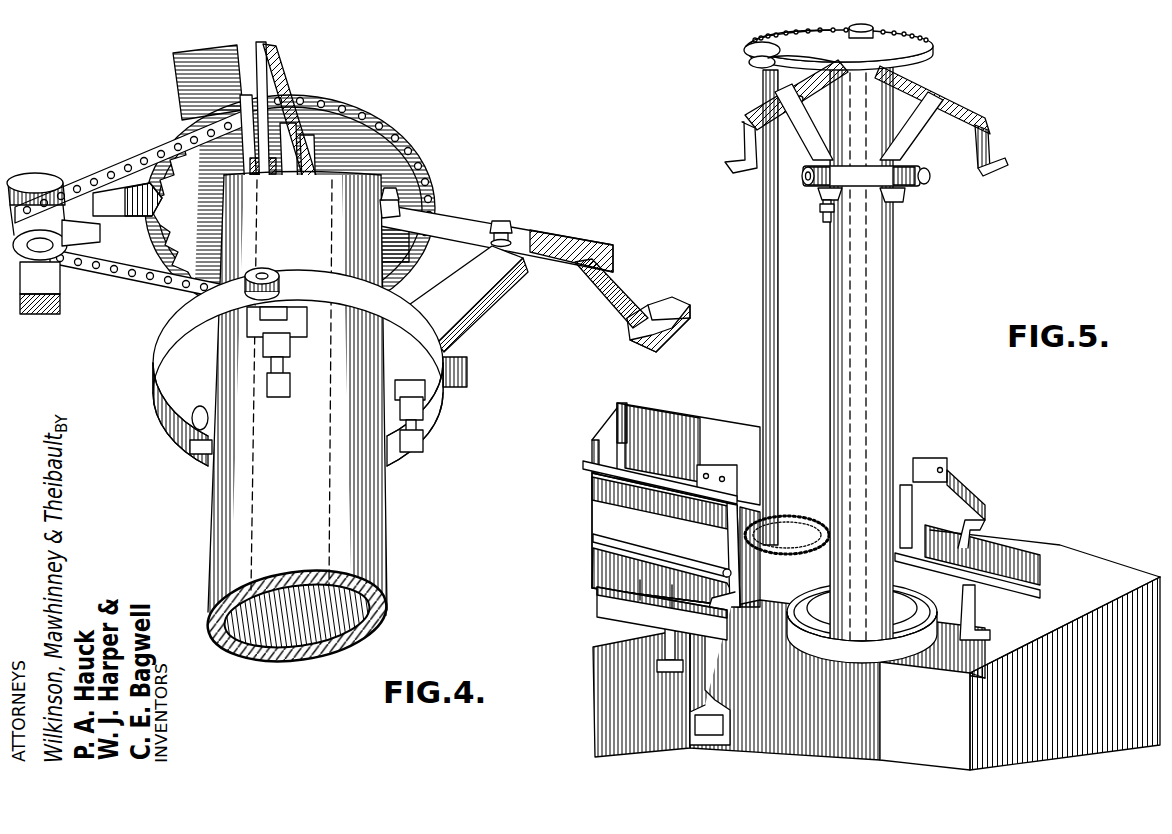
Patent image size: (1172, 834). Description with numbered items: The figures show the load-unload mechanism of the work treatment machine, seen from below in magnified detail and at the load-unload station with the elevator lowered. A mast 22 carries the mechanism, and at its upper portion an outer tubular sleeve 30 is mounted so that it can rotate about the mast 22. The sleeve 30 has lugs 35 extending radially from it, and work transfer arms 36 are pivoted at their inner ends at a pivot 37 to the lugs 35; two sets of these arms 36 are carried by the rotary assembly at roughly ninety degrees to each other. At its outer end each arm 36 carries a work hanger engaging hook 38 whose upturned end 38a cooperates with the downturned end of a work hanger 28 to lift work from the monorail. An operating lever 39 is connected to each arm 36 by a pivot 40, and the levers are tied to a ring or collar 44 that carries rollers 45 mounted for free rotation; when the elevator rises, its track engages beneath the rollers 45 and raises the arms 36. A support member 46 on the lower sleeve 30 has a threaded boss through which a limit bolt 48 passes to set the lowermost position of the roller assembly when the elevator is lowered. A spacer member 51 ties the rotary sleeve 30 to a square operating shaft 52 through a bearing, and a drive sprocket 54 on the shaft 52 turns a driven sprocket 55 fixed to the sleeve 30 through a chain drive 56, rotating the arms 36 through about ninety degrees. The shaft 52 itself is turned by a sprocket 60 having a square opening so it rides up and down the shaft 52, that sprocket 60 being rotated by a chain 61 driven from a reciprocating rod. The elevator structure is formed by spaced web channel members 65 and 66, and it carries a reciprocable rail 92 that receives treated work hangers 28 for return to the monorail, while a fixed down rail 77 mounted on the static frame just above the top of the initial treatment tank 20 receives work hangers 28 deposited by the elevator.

In FIG. 5, the initial treatment tank 20 is at (876, 650).
In FIG. 4, the mast 22 is at (372, 533).
In FIG. 5, the mast 22 is at (884, 340).
In FIG. 5, the work hanger 28 is at (985, 526).
In FIG. 4, the outer tubular sleeve 30 is at (336, 345).
In FIG. 5, the outer tubular sleeve 30 is at (860, 350).
In FIG. 4, the lug 35 is at (380, 246).
In FIG. 4, the work transfer arm 36 is at (284, 92).
In FIG. 5, the work transfer arm 36 is at (752, 110).
In FIG. 4, the pivot 37 is at (400, 210).
In FIG. 4, the work hanger engaging hook 38 is at (600, 298).
In FIG. 4, the upturned end 38a is at (186, 76).
In FIG. 5, the upturned end 38a is at (990, 178).
In FIG. 4, the operating lever 39 is at (200, 132).
In FIG. 5, the operating lever 39 is at (910, 140).
In FIG. 4, the pivot 40 is at (506, 224).
In FIG. 4, the collar 44 is at (168, 418).
In FIG. 5, the collar 44 is at (897, 208).
In FIG. 4, the roller 45 is at (245, 292).
In FIG. 5, the roller 45 is at (922, 181).
In FIG. 4, the support member 46 is at (294, 340).
In FIG. 4, the limit bolt 48 is at (281, 398).
In FIG. 4, the spacer member 51 is at (150, 200).
In FIG. 4, the square operating shaft 52 is at (50, 290).
In FIG. 5, the square operating shaft 52 is at (764, 382).
In FIG. 4, the drive sprocket 54 is at (78, 229).
In FIG. 4, the driven sprocket 55 is at (390, 150).
In FIG. 5, the driven sprocket 55 is at (912, 42).
In FIG. 4, the chain drive 56 is at (132, 150).
In FIG. 5, the chain drive 56 is at (775, 44).
In FIG. 5, the sprocket 60 is at (794, 522).
In FIG. 5, the chain 61 is at (812, 527).
In FIG. 5, the web channel member 65 is at (671, 507).
In FIG. 5, the web channel member 66 is at (688, 454).
In FIG. 5, the fixed down rail 77 is at (1010, 556).
In FIG. 5, the reciprocable rail 92 is at (597, 601).